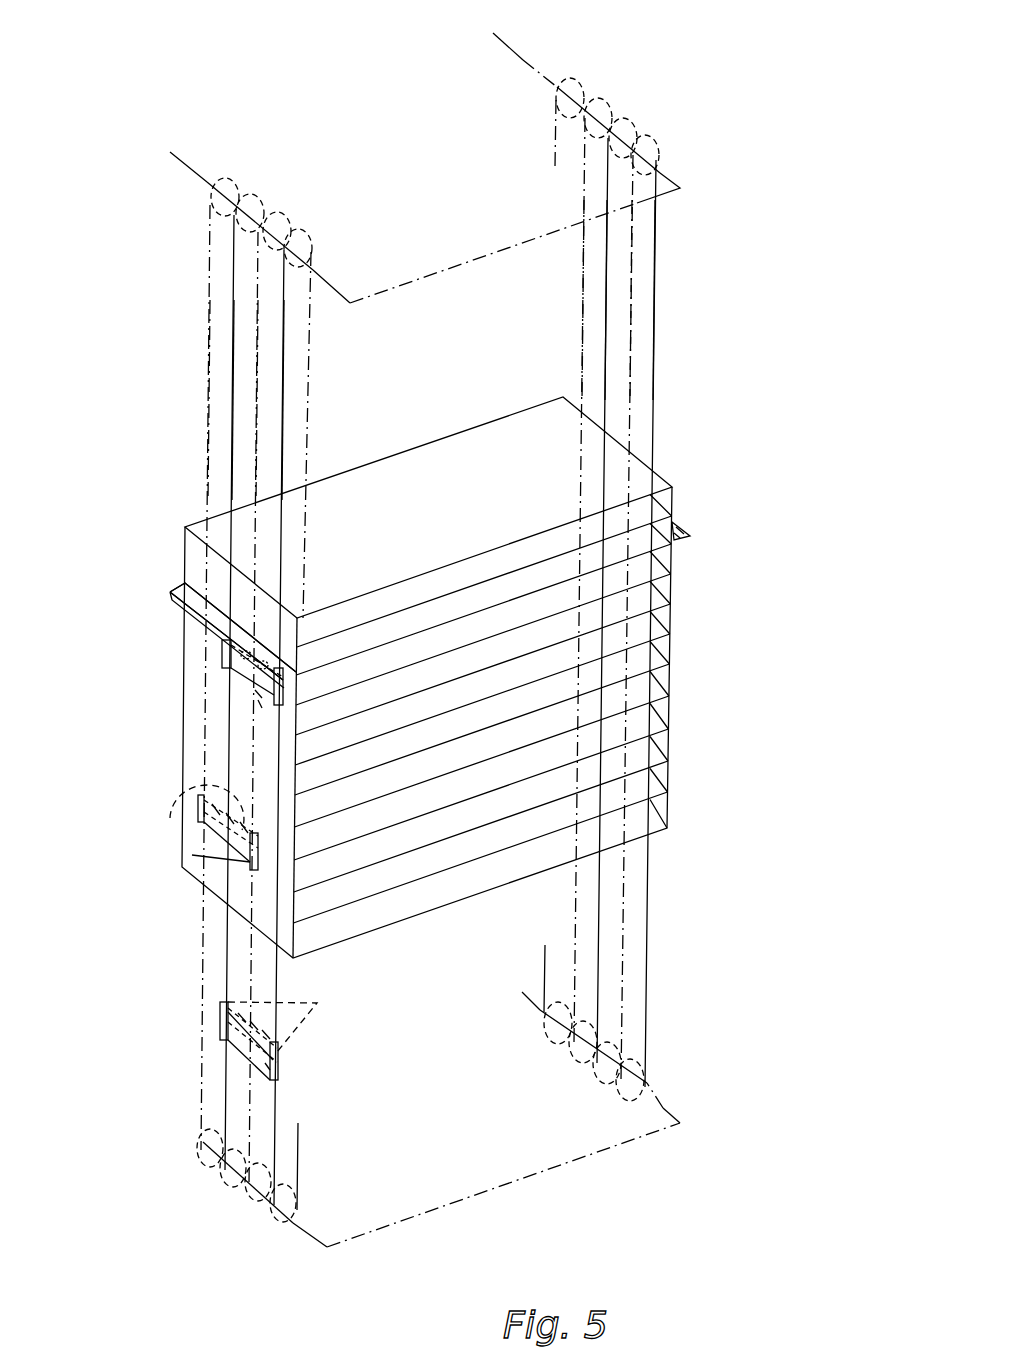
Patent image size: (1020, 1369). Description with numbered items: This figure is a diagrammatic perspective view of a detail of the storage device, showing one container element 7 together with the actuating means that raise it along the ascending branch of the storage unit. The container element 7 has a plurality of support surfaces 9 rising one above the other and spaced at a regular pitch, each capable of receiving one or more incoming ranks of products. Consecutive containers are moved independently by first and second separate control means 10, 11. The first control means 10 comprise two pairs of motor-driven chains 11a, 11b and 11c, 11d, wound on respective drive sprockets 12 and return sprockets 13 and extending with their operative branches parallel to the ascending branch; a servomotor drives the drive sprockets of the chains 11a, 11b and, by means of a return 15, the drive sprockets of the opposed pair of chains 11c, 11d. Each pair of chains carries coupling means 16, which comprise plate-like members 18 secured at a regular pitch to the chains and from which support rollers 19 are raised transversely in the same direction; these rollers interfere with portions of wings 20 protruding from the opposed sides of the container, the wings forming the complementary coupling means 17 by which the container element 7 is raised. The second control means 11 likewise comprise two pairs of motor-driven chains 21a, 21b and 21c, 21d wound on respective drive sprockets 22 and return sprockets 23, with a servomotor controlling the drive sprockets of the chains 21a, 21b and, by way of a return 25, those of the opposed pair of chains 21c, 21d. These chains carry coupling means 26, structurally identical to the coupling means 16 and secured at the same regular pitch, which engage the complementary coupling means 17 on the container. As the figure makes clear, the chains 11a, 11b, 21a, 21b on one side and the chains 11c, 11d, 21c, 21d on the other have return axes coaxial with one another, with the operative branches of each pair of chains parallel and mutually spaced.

The container element 7 is at (487, 420).
The support surfaces 9 is at (663, 512).
The first control means 10 is at (290, 170).
The second control means 11 is at (646, 74).
The motor-driven chain 11a is at (233, 420).
The motor-driven chain 11b is at (283, 447).
The motor-driven chain 11c is at (607, 378).
The motor-driven chain 11d is at (655, 415).
The drive sprocket 12 is at (255, 198).
The return sprocket 13 is at (233, 1187).
The return 15 is at (455, 275).
The coupling means 16 is at (230, 677).
The complementary coupling means 17 is at (200, 625).
The plate-like member 18 is at (258, 700).
The support roller 19 is at (178, 790).
The wing 20 is at (692, 531).
The motor-driven chain 21a is at (209, 395).
The motor-driven chain 21b is at (257, 370).
The motor-driven chain 21c is at (584, 273).
The motor-driven chain 21d is at (632, 317).
The drive sprocket 22 is at (205, 1165).
The return sprocket 23 is at (225, 182).
The return 25 is at (515, 1185).
The coupling means 26 is at (225, 868).